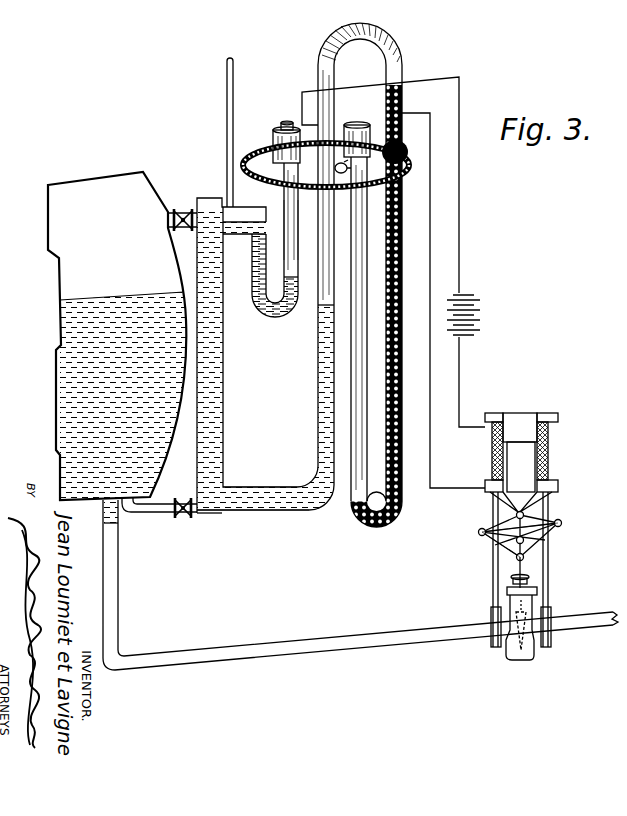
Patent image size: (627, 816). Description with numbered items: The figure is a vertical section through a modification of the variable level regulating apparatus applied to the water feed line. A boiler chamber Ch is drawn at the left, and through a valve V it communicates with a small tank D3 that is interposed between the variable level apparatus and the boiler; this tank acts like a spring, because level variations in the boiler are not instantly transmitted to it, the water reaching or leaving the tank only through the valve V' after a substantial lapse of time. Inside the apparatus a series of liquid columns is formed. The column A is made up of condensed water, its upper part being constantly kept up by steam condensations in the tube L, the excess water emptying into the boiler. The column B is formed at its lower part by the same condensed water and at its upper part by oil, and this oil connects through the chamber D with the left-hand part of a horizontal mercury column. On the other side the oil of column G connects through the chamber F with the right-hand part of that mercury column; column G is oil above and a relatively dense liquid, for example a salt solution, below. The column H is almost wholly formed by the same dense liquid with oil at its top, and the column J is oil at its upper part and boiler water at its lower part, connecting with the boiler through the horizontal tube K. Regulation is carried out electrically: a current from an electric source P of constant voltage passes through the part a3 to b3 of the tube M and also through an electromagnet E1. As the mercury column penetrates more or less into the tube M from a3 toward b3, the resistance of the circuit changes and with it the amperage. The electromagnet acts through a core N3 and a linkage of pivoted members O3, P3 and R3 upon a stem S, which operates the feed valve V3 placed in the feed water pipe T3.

The reservoir chamber Ch is at (117, 336).
The valve V is at (182, 210).
The valve V' is at (159, 519).
The pipe T3 is at (330, 645).
The tube (small tank) D3 is at (223, 378).
The horizontal tube K is at (255, 496).
The tube L is at (227, 121).
The column A is at (252, 268).
The column B is at (285, 262).
The tube M is at (312, 192).
The chamber D is at (274, 140).
The end of tube part a3- b3 is at (287, 122).
The column J is at (318, 278).
The column H is at (388, 298).
The column G is at (352, 264).
The chamber F is at (358, 122).
The end of tube part a3-b3 a3 is at (340, 162).
The electric source P is at (471, 315).
The electromagnet E1 is at (532, 530).
The core N3 is at (520, 452).
The link pivot O3 is at (550, 518).
The link P3 is at (548, 540).
The link R3 is at (545, 556).
The stem S is at (524, 572).
The valve V3 is at (505, 650).